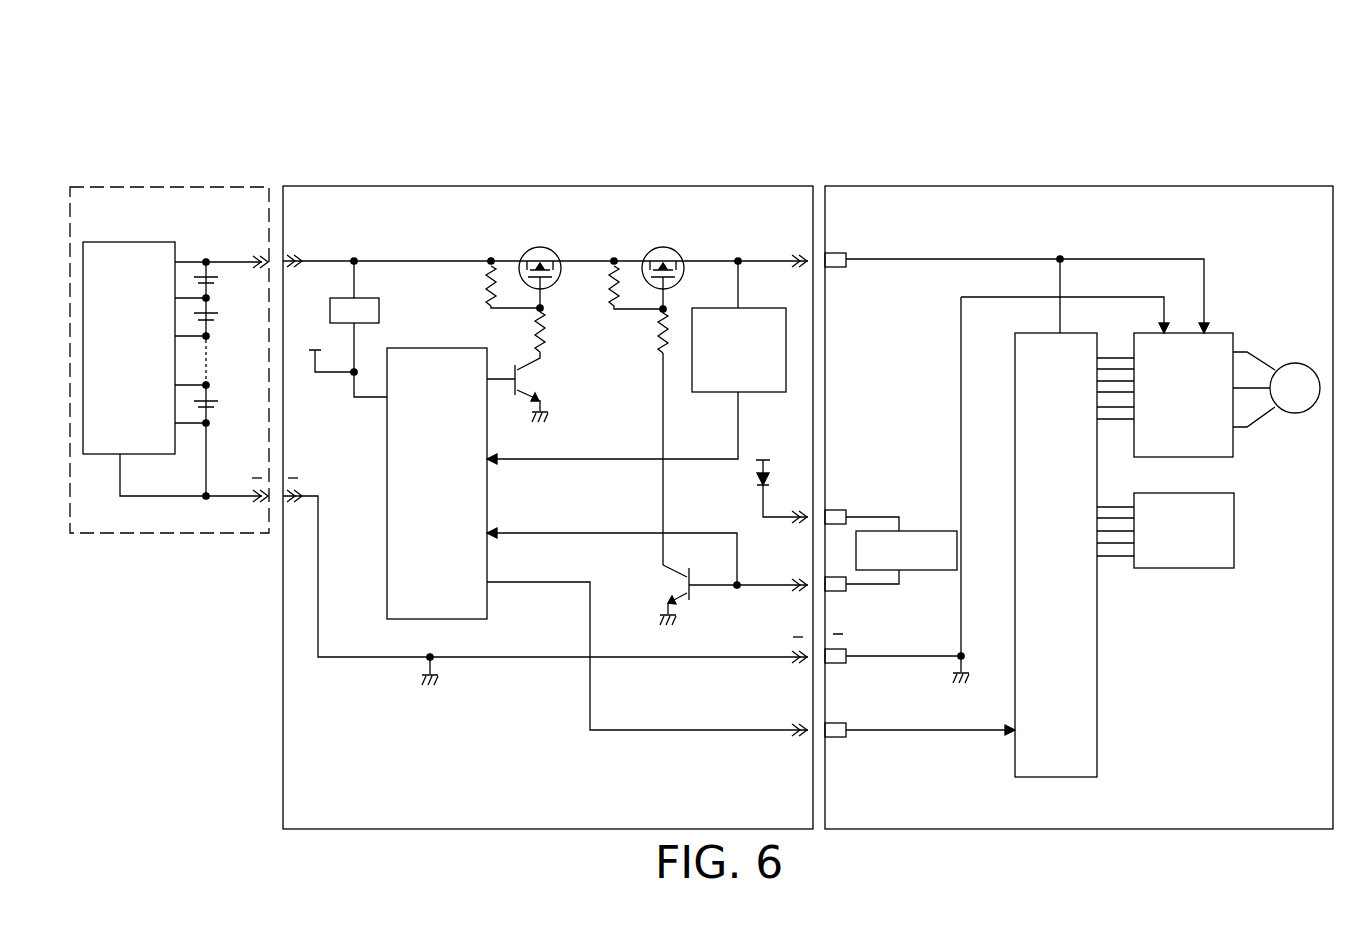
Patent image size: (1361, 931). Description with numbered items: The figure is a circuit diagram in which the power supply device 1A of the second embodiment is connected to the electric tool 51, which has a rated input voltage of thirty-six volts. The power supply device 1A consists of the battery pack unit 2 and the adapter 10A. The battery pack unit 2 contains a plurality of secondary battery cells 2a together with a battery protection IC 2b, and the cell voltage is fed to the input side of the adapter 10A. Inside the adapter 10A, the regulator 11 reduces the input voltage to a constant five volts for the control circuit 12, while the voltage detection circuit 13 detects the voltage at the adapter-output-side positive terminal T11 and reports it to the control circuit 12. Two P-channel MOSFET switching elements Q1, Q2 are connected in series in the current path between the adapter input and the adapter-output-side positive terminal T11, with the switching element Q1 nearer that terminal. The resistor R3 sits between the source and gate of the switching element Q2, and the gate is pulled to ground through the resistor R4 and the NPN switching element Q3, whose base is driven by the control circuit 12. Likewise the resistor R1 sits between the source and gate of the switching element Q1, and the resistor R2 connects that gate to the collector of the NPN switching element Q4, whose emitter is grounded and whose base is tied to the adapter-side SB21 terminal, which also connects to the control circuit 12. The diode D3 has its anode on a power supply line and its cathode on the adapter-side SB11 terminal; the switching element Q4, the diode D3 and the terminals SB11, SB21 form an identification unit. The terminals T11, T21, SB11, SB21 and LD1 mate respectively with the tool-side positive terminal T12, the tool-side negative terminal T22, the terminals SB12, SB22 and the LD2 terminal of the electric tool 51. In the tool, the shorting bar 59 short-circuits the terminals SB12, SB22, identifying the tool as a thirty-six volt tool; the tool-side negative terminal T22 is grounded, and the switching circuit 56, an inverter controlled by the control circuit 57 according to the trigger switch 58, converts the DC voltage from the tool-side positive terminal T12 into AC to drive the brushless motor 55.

The power supply device 1A is at (320, 82).
The battery pack unit 2 is at (222, 185).
The secondary battery cells 2a is at (217, 396).
The battery protection IC 2b is at (107, 241).
The adapter 10A is at (330, 185).
The regulator 11 is at (382, 297).
The control circuit 12 is at (387, 457).
The voltage detection circuit 13 is at (775, 393).
The electric tool 51 is at (1303, 185).
The motor 55 is at (1298, 365).
The switching circuit 56 is at (1228, 330).
The control circuit 57 is at (1097, 715).
The trigger switch 58 is at (1235, 558).
The shorting bar 59 is at (922, 528).
The adapter-output-side positive terminal T11 is at (807, 250).
The tool-side positive terminal T12 is at (843, 250).
The adapter-output-side negative terminal T21 is at (803, 662).
The tool-side negative terminal T22 is at (835, 665).
The adapter-side LD1 terminal LD1 is at (803, 735).
The tool-side LD2 terminal LD2 is at (835, 739).
The adapter-side SB11 terminal SB11 is at (803, 522).
The adapter-side SB21 terminal SB21 is at (803, 590).
The tool-side SB12 terminal SB12 is at (832, 510).
The tool-side SB22 terminal SB22 is at (835, 592).
The switching element Q1 is at (663, 253).
The switching element Q2 is at (540, 253).
The switching element Q3 is at (535, 387).
The switching element Q4 is at (655, 595).
The resistor R1 is at (621, 289).
The resistor R2 is at (645, 322).
The resistor R3 is at (497, 288).
The resistor R4 is at (559, 321).
The diode D3 is at (763, 484).